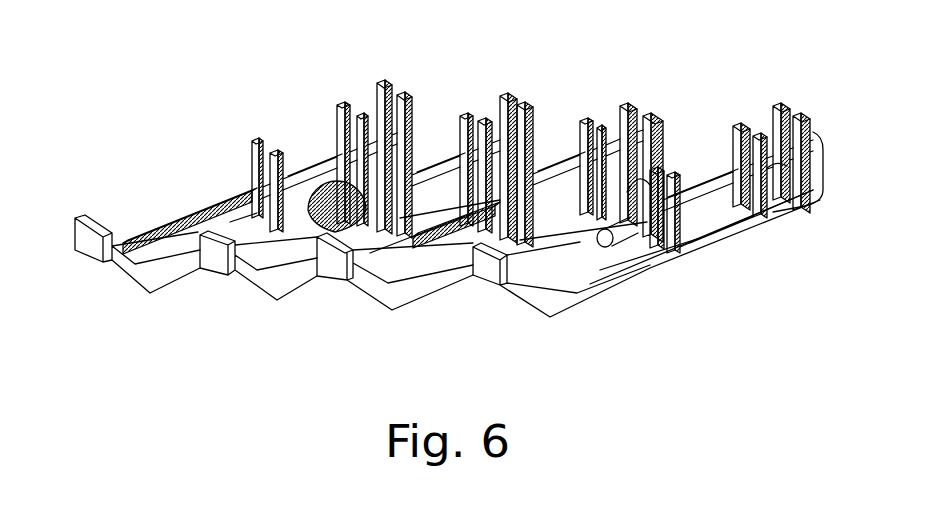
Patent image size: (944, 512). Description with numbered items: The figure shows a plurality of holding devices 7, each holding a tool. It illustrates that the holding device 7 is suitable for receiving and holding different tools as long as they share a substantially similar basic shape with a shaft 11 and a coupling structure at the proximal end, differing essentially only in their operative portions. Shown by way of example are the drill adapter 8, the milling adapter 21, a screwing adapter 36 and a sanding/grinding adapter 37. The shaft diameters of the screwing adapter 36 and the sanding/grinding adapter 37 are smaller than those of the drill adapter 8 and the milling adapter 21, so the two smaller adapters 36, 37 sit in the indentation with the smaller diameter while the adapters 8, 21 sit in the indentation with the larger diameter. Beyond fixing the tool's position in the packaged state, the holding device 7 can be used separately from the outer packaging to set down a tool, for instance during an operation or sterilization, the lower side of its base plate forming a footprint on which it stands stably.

The holding device 7 is at (113, 282).
The drill adapter 8 is at (208, 198).
The shaft 11 is at (315, 160).
The milling adapter 21 is at (433, 160).
The screwing adapter 36 is at (553, 163).
The sanding/grinding adapter 37 is at (697, 173).